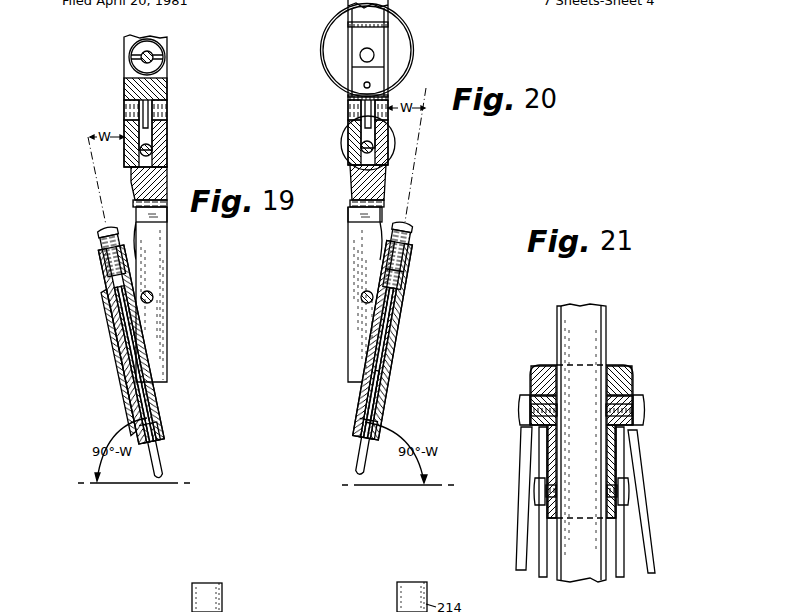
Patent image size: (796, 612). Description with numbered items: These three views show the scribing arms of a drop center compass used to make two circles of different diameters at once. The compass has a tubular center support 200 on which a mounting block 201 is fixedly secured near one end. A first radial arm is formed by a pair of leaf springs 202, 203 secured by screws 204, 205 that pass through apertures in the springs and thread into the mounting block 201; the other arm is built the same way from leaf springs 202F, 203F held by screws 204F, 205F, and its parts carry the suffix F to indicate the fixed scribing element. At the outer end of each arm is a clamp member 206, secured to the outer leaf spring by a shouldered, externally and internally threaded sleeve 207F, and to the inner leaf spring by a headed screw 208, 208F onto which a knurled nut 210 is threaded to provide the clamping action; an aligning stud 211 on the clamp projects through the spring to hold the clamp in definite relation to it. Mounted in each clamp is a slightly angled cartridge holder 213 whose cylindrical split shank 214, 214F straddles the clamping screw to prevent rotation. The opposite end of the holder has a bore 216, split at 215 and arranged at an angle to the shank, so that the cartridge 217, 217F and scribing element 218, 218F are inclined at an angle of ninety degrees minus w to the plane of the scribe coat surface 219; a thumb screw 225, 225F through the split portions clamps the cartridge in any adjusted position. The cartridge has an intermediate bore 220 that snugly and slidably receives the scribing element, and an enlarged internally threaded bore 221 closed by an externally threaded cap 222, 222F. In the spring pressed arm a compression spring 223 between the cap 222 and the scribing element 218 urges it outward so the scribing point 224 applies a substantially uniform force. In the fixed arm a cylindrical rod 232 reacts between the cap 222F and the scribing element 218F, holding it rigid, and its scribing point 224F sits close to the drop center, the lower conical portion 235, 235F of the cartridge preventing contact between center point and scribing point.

In FIG. 21, the tubular center support 200 is at (594, 351).
In FIG. 21, the mounting block 201 is at (546, 365).
In FIG. 20, the leaf spring 202 is at (382, 79).
In FIG. 21, the leaf spring 202 is at (556, 592).
In FIG. 21, the leaf spring 202F is at (630, 577).
In FIG. 20, the leaf spring 203 is at (356, 12).
In FIG. 21, the leaf spring 203 is at (520, 556).
In FIG. 21, the leaf spring 203F is at (655, 559).
In FIG. 21, the screw 204 is at (534, 491).
In FIG. 21, the screw 204F is at (630, 488).
In FIG. 21, the screw 205 is at (522, 410).
In FIG. 21, the screw 205F is at (643, 410).
In FIG. 20, the clamp member 206 is at (380, 44).
In FIG. 19, the shouldered threaded sleeve 207F is at (166, 52).
In FIG. 20, the headed screw 208 is at (361, 148).
In FIG. 19, the headed screw 208F is at (152, 151).
In FIG. 20, the knurled nut 210 is at (345, 132).
In FIG. 20, the aligning stud 211 is at (363, 86).
In FIG. 20, the cartridge holder 213 is at (360, 234).
In FIG. 20, the split shank 214 is at (362, 172).
In FIG. 19, the split shank 214F is at (158, 172).
In FIG. 19, the split 215 is at (131, 344).
In FIG. 20, the split 215 is at (409, 319).
In FIG. 19, the bore 216 is at (135, 363).
In FIG. 20, the bore 216 is at (400, 341).
In FIG. 20, the cartridge 217 is at (386, 398).
In FIG. 19, the cartridge 217F is at (134, 399).
In FIG. 20, the scribing element 218 is at (380, 415).
In FIG. 19, the scribing element 218F is at (128, 377).
In FIG. 19, the scribe coat surface 219 is at (127, 483).
In FIG. 20, the intermediate bore 220 is at (366, 395).
In FIG. 20, the enlarged internally threaded bore 221 is at (405, 252).
In FIG. 20, the cap 222 is at (413, 222).
In FIG. 19, the cap 222F is at (100, 230).
In FIG. 20, the spring 223 is at (410, 272).
In FIG. 20, the scribing point 224 is at (358, 485).
In FIG. 19, the scribing point 224F is at (162, 481).
In FIG. 20, the thumb screw 225 is at (361, 300).
In FIG. 19, the thumb screw 225F is at (154, 297).
In FIG. 19, the cylindrical rod 232 is at (104, 270).
In FIG. 20, the lower conical portion 235 is at (372, 420).
In FIG. 19, the lower conical portion 235F is at (160, 414).